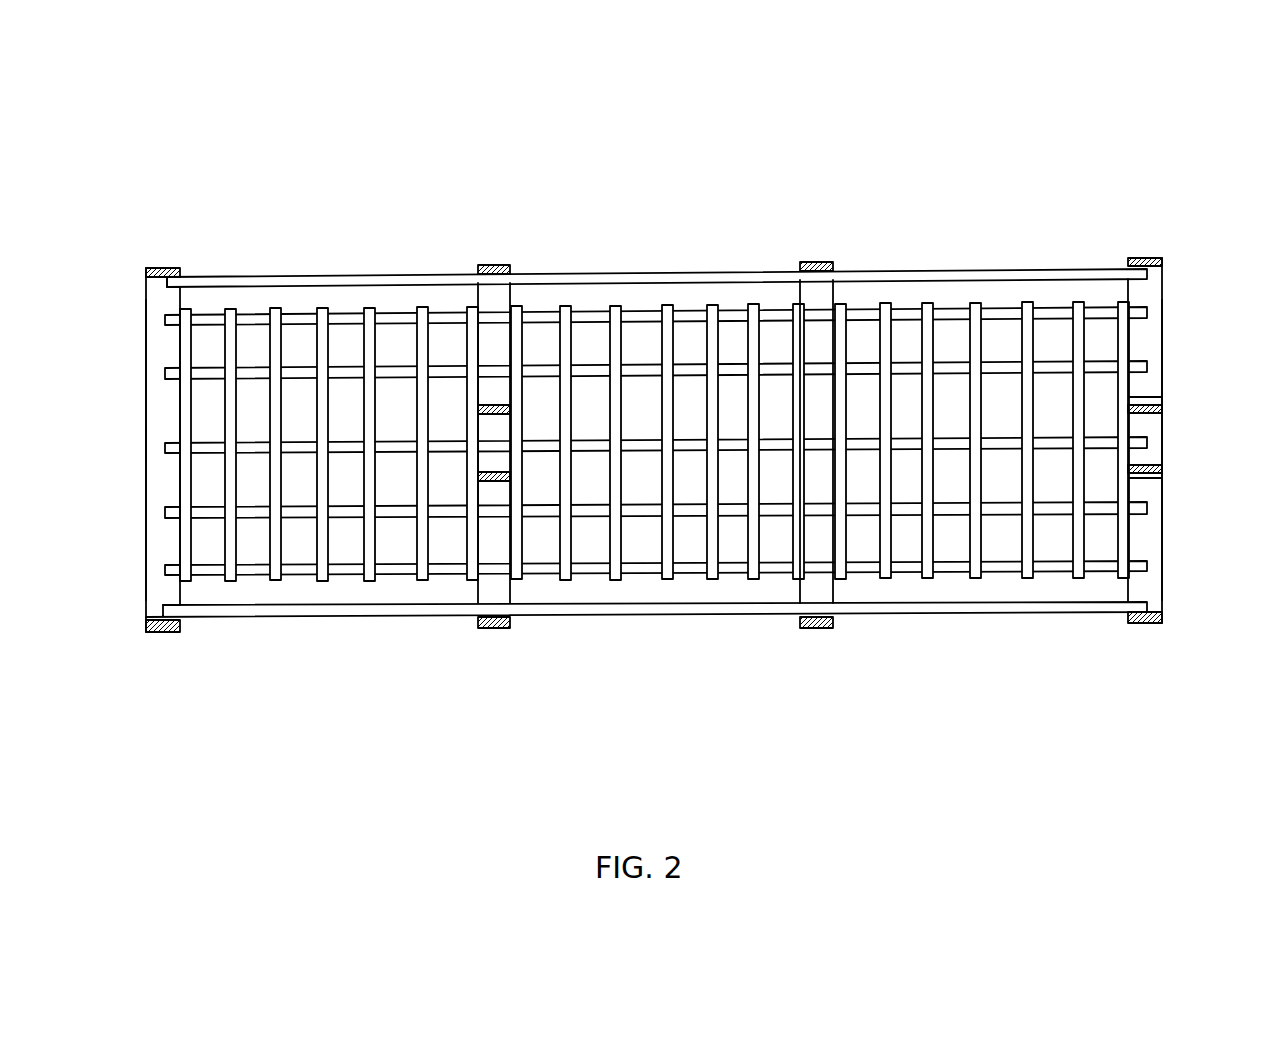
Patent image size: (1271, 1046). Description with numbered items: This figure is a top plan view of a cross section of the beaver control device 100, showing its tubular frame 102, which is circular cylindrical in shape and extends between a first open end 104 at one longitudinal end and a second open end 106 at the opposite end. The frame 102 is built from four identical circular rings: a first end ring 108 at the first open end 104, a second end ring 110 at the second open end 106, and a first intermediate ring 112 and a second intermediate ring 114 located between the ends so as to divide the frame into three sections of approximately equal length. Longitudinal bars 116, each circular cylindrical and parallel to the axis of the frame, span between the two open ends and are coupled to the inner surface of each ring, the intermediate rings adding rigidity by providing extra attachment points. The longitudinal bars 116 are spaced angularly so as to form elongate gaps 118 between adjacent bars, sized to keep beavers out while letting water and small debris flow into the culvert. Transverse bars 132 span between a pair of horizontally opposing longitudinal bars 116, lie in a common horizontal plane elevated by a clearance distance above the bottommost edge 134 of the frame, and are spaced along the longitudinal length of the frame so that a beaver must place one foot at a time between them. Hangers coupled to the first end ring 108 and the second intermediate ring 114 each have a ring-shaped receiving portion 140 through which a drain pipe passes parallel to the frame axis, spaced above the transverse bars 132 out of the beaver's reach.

The beaver control device 100 is at (1174, 97).
The frame 102 is at (131, 180).
The first open end 104 is at (1188, 565).
The second open end 106 is at (116, 572).
The first end ring 108 is at (1143, 626).
The second end ring 110 is at (158, 632).
The first intermediate ring 112 is at (813, 628).
The second intermediate ring 114 is at (490, 630).
The longitudinal bars 116 is at (343, 377).
The gaps 118 is at (690, 292).
The transverse bars 132 is at (612, 585).
The bottommost edge 134 is at (135, 452).
The receiving portion 140 is at (540, 428).